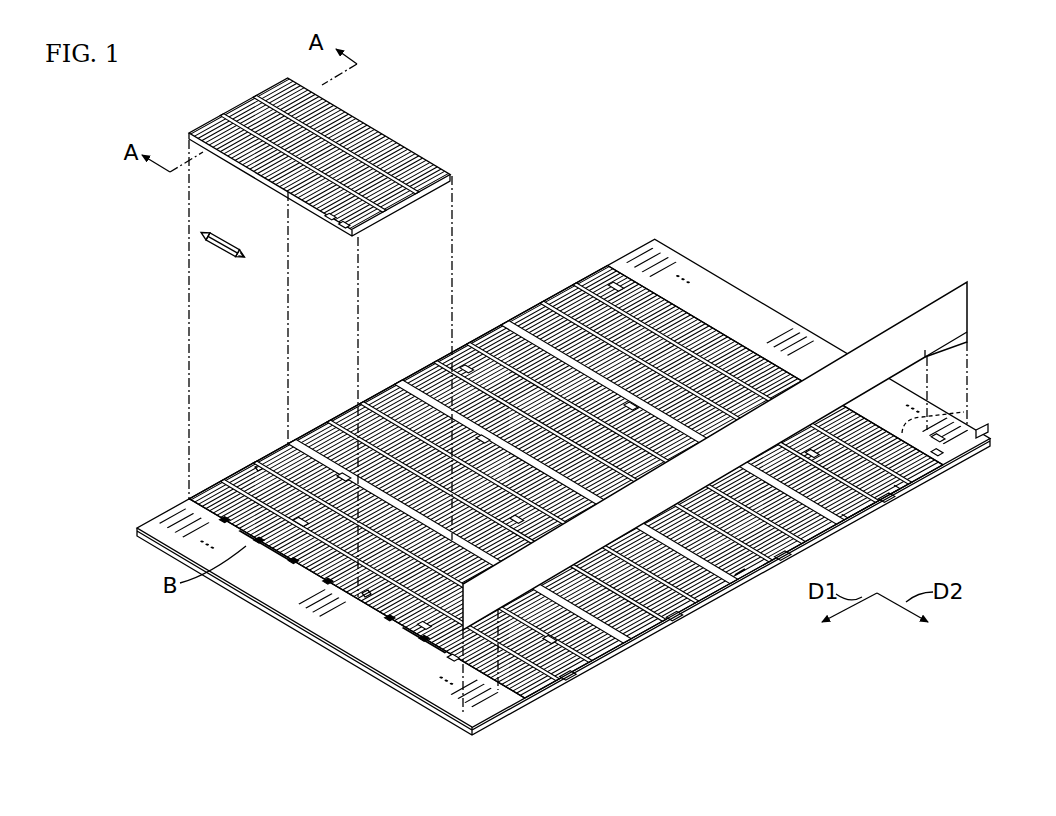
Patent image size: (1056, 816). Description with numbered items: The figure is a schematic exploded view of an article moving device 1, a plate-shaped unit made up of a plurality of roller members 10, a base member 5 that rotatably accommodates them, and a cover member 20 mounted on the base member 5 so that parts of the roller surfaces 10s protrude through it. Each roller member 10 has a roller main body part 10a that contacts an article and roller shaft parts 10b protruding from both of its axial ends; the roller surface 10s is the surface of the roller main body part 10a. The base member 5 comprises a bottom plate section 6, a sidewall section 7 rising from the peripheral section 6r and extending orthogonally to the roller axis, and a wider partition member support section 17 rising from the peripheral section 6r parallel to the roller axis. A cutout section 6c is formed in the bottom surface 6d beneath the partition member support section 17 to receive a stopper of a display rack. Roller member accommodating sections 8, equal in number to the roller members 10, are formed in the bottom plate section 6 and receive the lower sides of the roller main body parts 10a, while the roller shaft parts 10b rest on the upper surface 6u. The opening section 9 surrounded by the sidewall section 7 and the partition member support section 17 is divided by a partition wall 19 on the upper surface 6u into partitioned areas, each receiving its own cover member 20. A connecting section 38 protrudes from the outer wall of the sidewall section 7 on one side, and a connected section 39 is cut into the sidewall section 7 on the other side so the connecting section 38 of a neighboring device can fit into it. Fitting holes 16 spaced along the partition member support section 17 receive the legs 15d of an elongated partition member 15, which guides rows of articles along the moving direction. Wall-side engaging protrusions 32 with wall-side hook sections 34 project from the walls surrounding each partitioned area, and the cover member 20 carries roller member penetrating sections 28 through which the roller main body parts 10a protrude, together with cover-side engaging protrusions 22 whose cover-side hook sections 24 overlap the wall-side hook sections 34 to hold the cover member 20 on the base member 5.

The article moving device 1 is at (833, 207).
The base member 5 is at (156, 512).
The bottom plate section 6 is at (541, 612).
The cutout section 6c is at (695, 555).
The bottom surface 6d is at (742, 582).
The peripheral section 6r is at (938, 438).
The upper surface 6u is at (424, 625).
The sidewall section 7 is at (342, 591).
The roller member accommodating section 8 is at (301, 521).
The opening section 9 is at (871, 501).
The roller member 10 is at (207, 249).
The roller main body part 10a is at (223, 245).
The roller shaft part 10b is at (222, 245).
The roller surface 10s is at (241, 255).
The partition member 15 is at (681, 477).
The leg 15d is at (958, 357).
The fitting hole 16 is at (564, 477).
The partition member support section 17 is at (488, 531).
The partition wall 19 is at (566, 482).
The cover member 20 is at (440, 152).
The cover-side engaging protrusion 22 is at (319, 154).
The cover-side hook section 24 is at (330, 216).
The roller member penetrating section 28 is at (344, 224).
The wall-side engaging protrusion 32 is at (940, 428).
The wall-side hook section 34 is at (986, 428).
The connecting section 38 is at (727, 586).
The connected section 39 is at (616, 286).